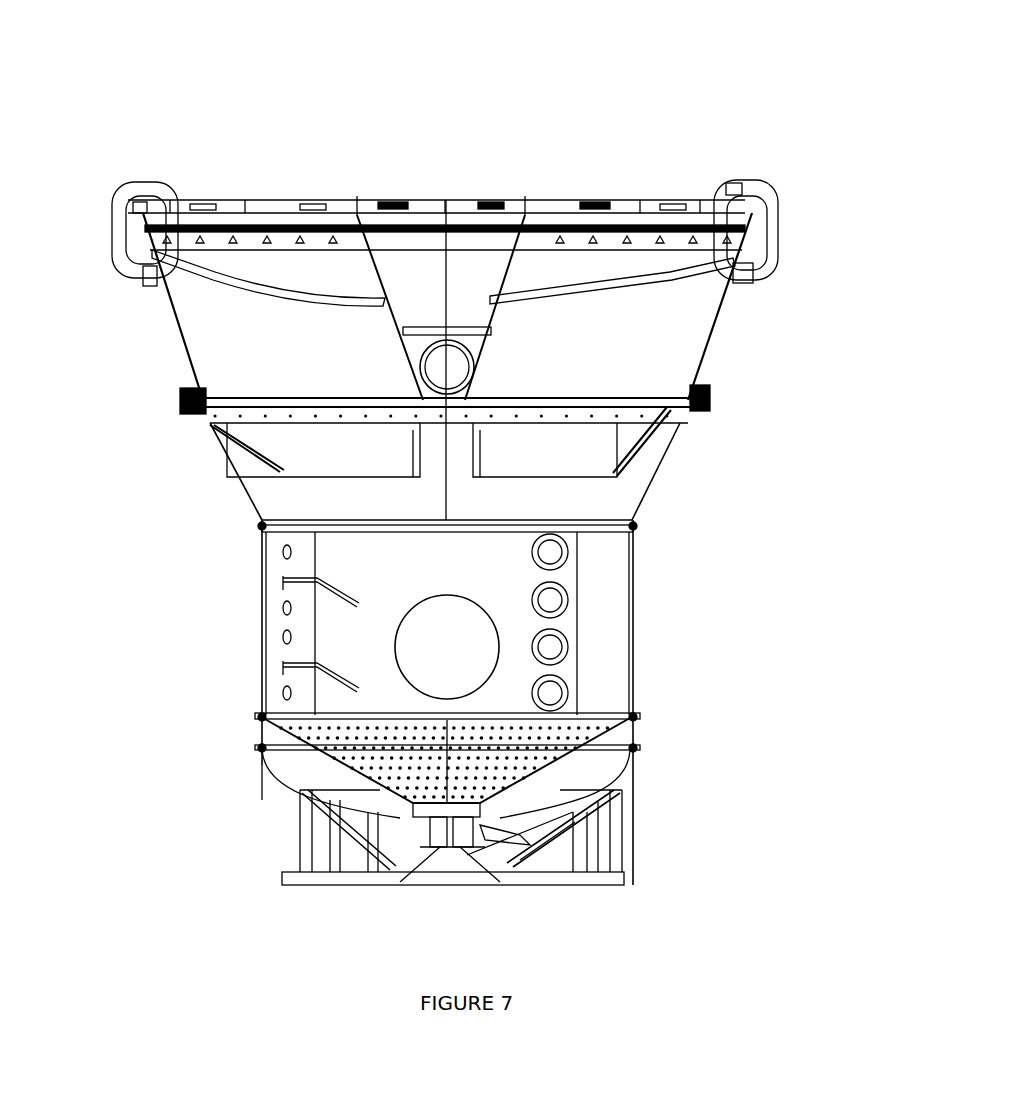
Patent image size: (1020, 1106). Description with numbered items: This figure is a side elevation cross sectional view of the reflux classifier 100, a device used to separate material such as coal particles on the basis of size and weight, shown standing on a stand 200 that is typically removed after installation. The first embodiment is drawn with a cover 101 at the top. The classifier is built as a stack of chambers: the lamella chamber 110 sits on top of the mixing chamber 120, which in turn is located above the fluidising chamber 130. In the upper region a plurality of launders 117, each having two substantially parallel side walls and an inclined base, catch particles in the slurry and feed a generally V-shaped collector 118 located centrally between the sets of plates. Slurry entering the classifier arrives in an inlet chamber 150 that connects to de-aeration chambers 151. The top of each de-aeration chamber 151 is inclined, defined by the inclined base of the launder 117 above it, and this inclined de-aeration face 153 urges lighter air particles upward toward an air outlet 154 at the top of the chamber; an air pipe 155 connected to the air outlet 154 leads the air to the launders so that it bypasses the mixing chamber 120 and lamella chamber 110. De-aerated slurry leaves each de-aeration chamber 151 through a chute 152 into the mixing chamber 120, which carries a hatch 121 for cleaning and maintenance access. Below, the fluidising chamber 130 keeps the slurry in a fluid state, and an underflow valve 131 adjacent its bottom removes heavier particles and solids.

The reflux classifier 100 is at (730, 77).
The cover 101 is at (683, 200).
The lamella chamber 110 is at (180, 330).
The launders 117 is at (535, 270).
The collector 118 is at (465, 260).
The mixing chamber 120 is at (598, 620).
The hatch 121 is at (393, 633).
The fluidising chamber 130 is at (597, 762).
The underflow valve 131 is at (453, 852).
The inlet chamber 150 is at (418, 343).
The de-aeration chambers 151 is at (657, 337).
The chute 152 is at (640, 448).
The inclined de-aeration face 153 is at (690, 273).
The air outlet 154 is at (745, 293).
The air pipe 155 is at (775, 180).
The stand 200 is at (632, 863).